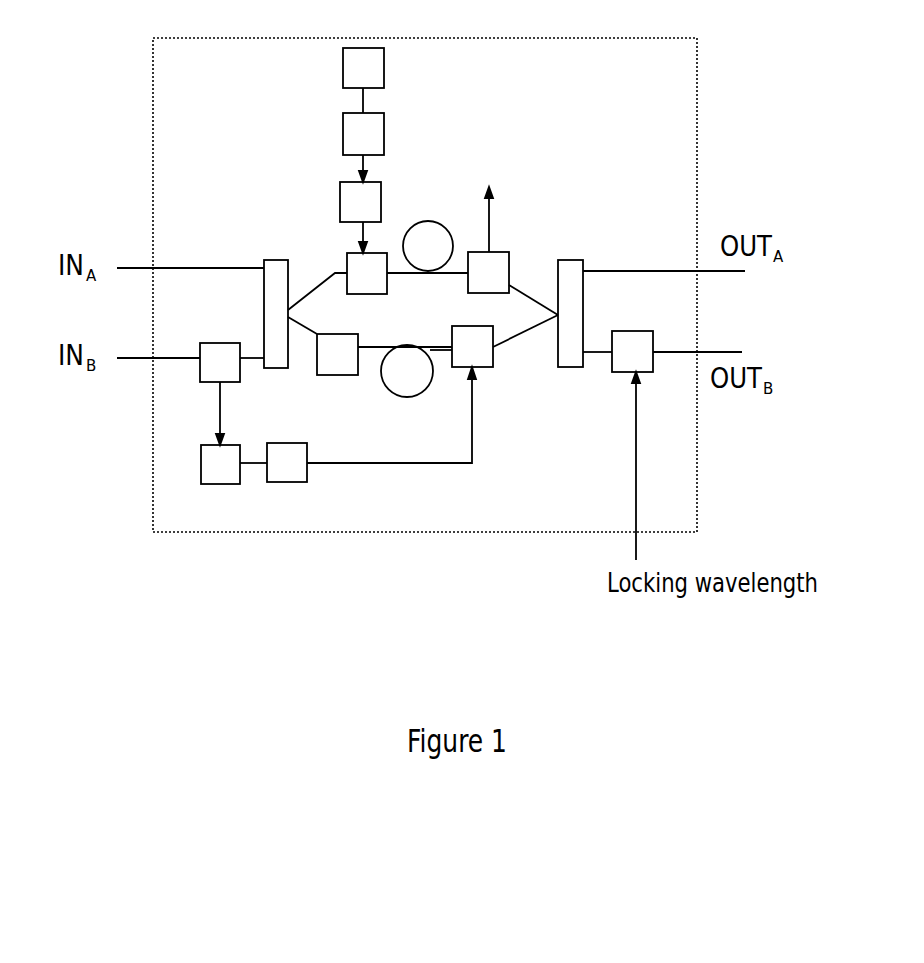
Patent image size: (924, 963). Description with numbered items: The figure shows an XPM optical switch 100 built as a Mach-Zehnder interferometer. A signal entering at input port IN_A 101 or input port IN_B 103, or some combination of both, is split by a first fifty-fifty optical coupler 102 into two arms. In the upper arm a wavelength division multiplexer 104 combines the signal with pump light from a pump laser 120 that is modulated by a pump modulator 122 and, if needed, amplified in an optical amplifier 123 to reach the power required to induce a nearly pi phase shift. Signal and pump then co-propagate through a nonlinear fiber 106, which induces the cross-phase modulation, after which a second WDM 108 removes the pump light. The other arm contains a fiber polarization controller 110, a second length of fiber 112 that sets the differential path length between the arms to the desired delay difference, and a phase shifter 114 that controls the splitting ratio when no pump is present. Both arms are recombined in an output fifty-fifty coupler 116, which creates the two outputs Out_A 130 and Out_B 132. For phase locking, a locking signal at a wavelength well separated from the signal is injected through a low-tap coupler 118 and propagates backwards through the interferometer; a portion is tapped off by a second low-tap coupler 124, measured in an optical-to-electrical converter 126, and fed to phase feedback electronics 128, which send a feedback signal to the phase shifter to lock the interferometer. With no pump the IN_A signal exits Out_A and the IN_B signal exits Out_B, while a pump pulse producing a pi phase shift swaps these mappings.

The XPM optical switch 100 is at (425, 274).
The input port IN_A 101 is at (188, 252).
The first 50/50 optical coupler 102 is at (294, 302).
The input port IN_B 103 is at (187, 346).
The wavelength division multiplexer 104 is at (390, 264).
The nonlinear fiber 106 is at (428, 232).
The second WDM 108 is at (513, 251).
The fiber polarization controller 110 is at (382, 376).
The second length of fiber 112 is at (407, 389).
The phase shifter 114 is at (505, 357).
The output 50/50 coupler 116 is at (585, 295).
The low-tap coupler 118 is at (633, 432).
The pump laser 120 is at (338, 80).
The pump modulator 122 is at (338, 147).
The optical amplifier 123 is at (339, 217).
The second low-tap coupler 124 is at (201, 394).
The optical-to-electrical converter 126 is at (234, 485).
The phase feedback electronics 128 is at (370, 442).
The output port Out_A 130 is at (710, 268).
The output port Out_B 132 is at (743, 353).